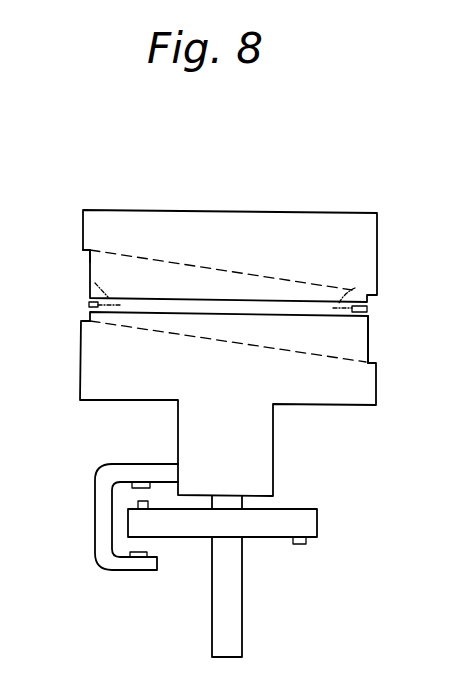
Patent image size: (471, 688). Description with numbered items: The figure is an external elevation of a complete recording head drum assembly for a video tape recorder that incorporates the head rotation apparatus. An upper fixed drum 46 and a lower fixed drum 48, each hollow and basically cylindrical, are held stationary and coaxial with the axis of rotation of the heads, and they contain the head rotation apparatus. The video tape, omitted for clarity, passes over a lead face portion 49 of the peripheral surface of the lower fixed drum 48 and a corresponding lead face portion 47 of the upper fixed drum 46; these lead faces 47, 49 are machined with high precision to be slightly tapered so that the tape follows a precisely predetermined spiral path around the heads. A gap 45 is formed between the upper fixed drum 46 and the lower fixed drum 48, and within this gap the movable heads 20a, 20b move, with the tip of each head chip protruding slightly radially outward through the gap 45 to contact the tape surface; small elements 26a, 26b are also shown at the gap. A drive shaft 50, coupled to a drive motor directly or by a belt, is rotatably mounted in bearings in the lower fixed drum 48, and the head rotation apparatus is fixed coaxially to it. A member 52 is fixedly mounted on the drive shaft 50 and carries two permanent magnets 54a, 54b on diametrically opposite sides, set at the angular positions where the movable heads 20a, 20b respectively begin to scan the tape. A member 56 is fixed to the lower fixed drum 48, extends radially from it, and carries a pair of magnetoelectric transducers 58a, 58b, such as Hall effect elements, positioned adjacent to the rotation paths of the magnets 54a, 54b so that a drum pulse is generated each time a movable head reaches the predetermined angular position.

The upper fixed drum 46 is at (131, 210).
The lead face portion 47 is at (89, 258).
The movable head 20a is at (88, 280).
The movable head 20b is at (355, 288).
The first optical element 26a is at (86, 304).
The second optical element 26b is at (370, 308).
The gap 45 is at (158, 306).
The lower fixed drum 48 is at (379, 386).
The lead face portion 49 is at (373, 340).
The drive shaft 50 is at (243, 636).
The member 52 is at (305, 512).
The permanent magnet 54a is at (137, 502).
The permanent magnet 54b is at (300, 545).
The member 56 is at (118, 463).
The magnetoelectric transducer 58a is at (113, 484).
The magnetoelectric transducer 58b is at (148, 552).